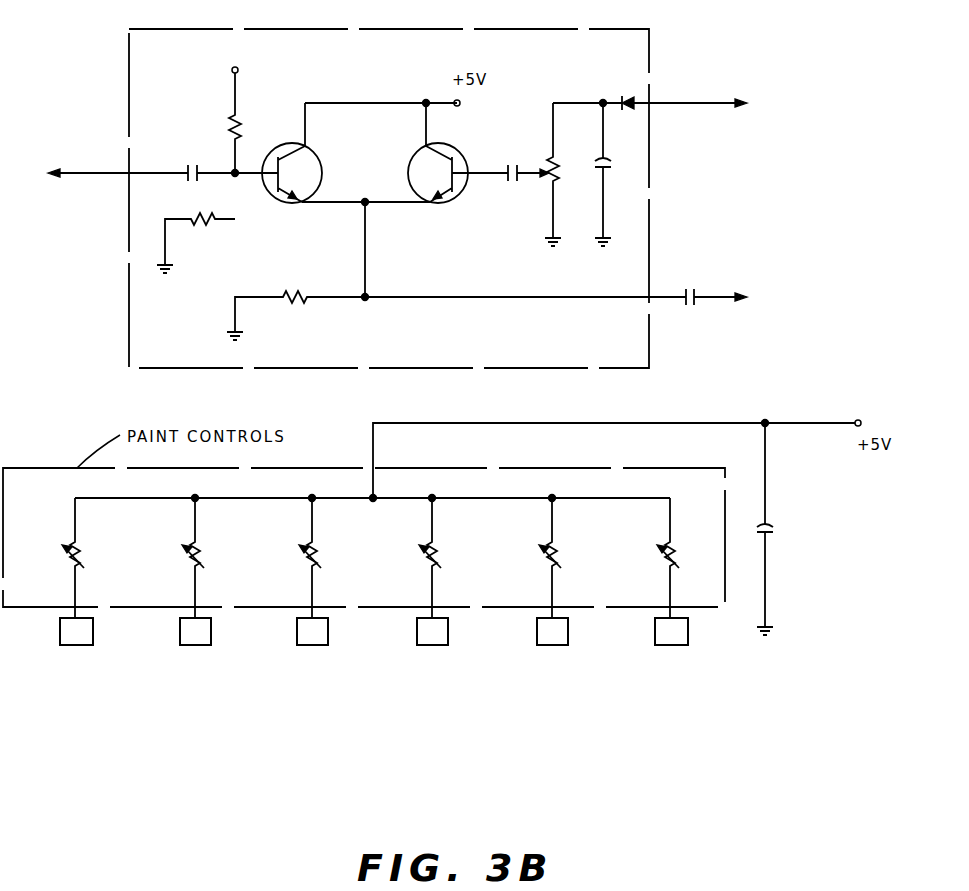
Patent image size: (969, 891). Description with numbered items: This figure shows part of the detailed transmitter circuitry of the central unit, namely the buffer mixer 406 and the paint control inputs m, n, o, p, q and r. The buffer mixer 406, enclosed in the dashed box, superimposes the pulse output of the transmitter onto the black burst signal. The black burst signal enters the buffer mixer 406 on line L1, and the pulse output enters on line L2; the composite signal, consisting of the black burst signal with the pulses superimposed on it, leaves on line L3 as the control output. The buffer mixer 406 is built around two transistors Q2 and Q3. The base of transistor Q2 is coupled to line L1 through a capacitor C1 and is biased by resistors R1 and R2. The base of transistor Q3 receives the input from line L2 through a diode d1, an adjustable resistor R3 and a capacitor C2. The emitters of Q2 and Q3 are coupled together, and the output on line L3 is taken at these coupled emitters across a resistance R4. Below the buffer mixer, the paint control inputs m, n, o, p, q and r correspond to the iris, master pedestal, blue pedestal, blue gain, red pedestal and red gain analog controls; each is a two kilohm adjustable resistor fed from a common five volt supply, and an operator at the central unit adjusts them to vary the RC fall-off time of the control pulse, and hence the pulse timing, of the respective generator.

The buffer mixer 406 is at (650, 70).
The resistor R1 is at (247, 122).
The resistor R2 is at (196, 243).
The adjustable resistor R3 is at (565, 174).
The resistance R4 is at (298, 300).
The capacitor C1 is at (205, 161).
The capacitor C2 is at (528, 159).
The transistor Q2 is at (289, 153).
The transistor Q3 is at (458, 153).
The diode d1 is at (680, 89).
The line L1 is at (114, 190).
The line L2 is at (737, 123).
The line L3 is at (610, 294).
The paint control input m is at (62, 571).
The paint control input n is at (159, 571).
The paint control input o is at (285, 571).
The paint control input p is at (407, 571).
The paint control input q is at (534, 571).
The paint control input r is at (658, 571).